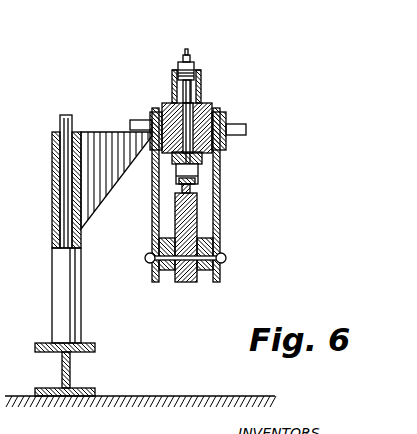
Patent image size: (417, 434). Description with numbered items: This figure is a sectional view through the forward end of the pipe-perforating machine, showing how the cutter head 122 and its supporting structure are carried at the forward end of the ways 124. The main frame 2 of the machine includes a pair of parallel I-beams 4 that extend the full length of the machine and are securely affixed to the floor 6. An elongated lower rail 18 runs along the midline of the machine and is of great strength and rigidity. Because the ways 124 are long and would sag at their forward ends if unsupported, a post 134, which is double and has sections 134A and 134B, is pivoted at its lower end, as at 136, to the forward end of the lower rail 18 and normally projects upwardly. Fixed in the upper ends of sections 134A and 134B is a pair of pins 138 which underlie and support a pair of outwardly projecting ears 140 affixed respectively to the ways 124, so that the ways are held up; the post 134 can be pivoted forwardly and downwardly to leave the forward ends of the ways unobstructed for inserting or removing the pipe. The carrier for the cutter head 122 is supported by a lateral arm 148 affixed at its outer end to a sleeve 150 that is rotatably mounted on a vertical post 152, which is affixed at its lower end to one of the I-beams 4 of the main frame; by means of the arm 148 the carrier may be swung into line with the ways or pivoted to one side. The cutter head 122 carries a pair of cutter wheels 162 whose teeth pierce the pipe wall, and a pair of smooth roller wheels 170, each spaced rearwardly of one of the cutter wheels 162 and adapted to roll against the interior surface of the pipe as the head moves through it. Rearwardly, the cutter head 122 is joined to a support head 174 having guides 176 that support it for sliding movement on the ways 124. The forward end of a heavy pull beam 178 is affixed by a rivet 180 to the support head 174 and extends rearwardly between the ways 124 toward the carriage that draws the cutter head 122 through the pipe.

The main frame 2 is at (35, 343).
The I-beam 4 is at (62, 368).
The floor 6 is at (150, 396).
The lower rail 18 is at (198, 213).
The cutter head 122 is at (200, 66).
The ways 124 is at (159, 112).
The post 134 is at (221, 187).
The post section 134A is at (158, 221).
The post section 134B is at (221, 228).
The pivot 136 is at (226, 259).
The pin 138 is at (242, 139).
The ear 140 is at (140, 121).
The lateral arm 148 is at (94, 131).
The sleeve 150 is at (52, 143).
The vertical post 152 is at (61, 121).
The cutter wheel 162 is at (192, 57).
The roller wheel 170 is at (186, 56).
The support head 174 is at (199, 101).
The guides 176 is at (161, 110).
The pull beam 178 is at (224, 151).
The rivet 180 is at (185, 118).